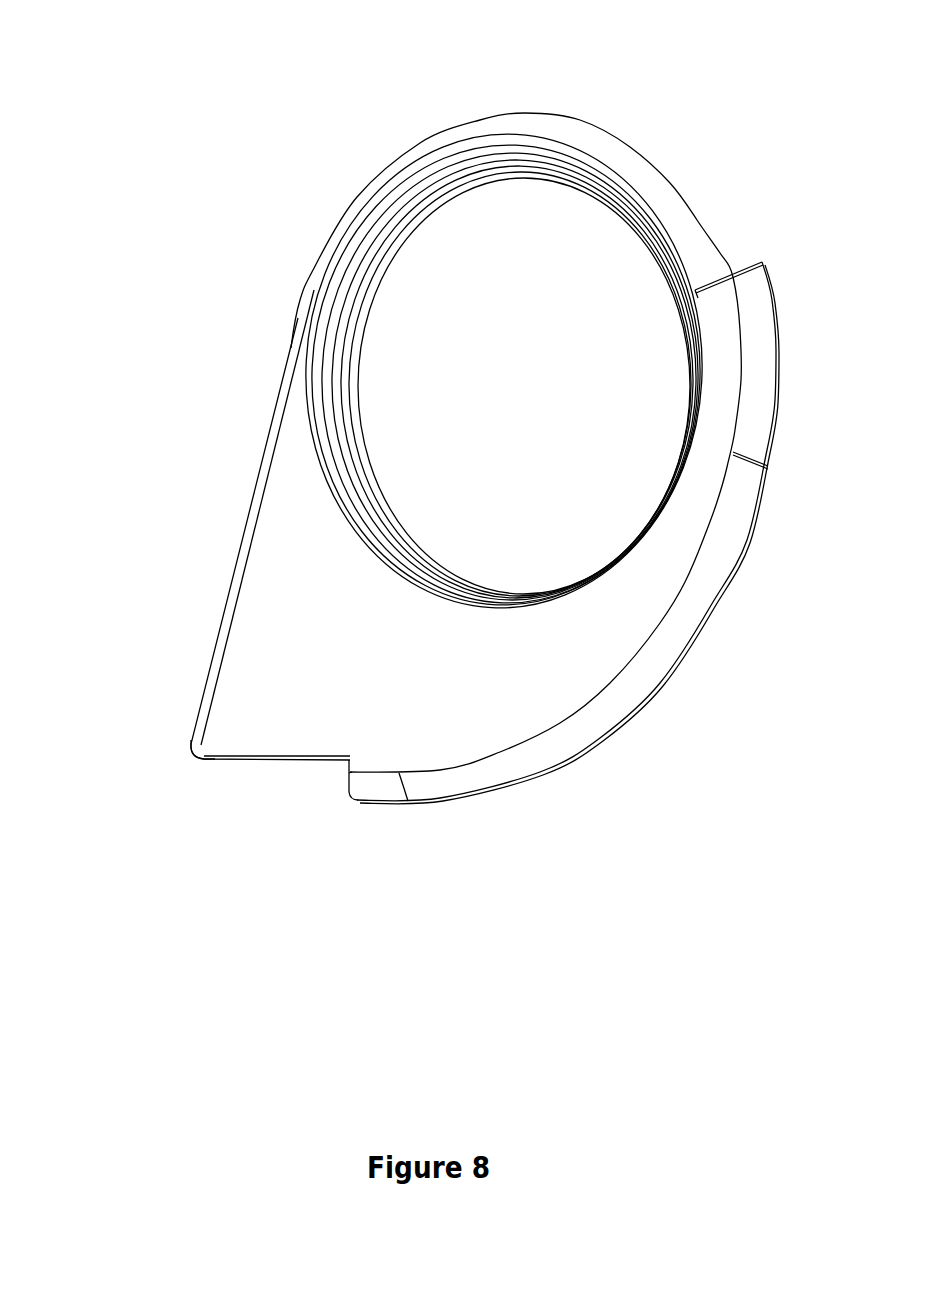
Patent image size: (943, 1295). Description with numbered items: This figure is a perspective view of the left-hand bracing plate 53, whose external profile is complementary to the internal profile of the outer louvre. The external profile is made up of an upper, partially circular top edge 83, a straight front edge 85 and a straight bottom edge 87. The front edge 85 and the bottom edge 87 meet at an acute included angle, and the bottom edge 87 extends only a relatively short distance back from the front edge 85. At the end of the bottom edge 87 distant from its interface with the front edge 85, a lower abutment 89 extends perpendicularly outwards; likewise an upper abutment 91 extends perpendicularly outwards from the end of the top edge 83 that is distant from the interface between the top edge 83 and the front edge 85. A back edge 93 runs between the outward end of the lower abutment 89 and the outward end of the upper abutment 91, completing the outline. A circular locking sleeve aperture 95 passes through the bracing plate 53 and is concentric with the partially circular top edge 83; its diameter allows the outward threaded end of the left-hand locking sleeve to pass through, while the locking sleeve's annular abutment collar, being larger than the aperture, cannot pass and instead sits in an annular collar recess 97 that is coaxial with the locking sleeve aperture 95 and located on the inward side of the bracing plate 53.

The top edge 83 is at (523, 113).
The annular collar recess 97 is at (445, 180).
The locking sleeve aperture 95 is at (597, 490).
The back edge 93 is at (593, 745).
The upper abutment 91 is at (745, 260).
The front edge 85 is at (250, 505).
The left-hand bracing plate 53 is at (292, 645).
The bottom edge 87 is at (212, 759).
The lower abutment 89 is at (347, 785).